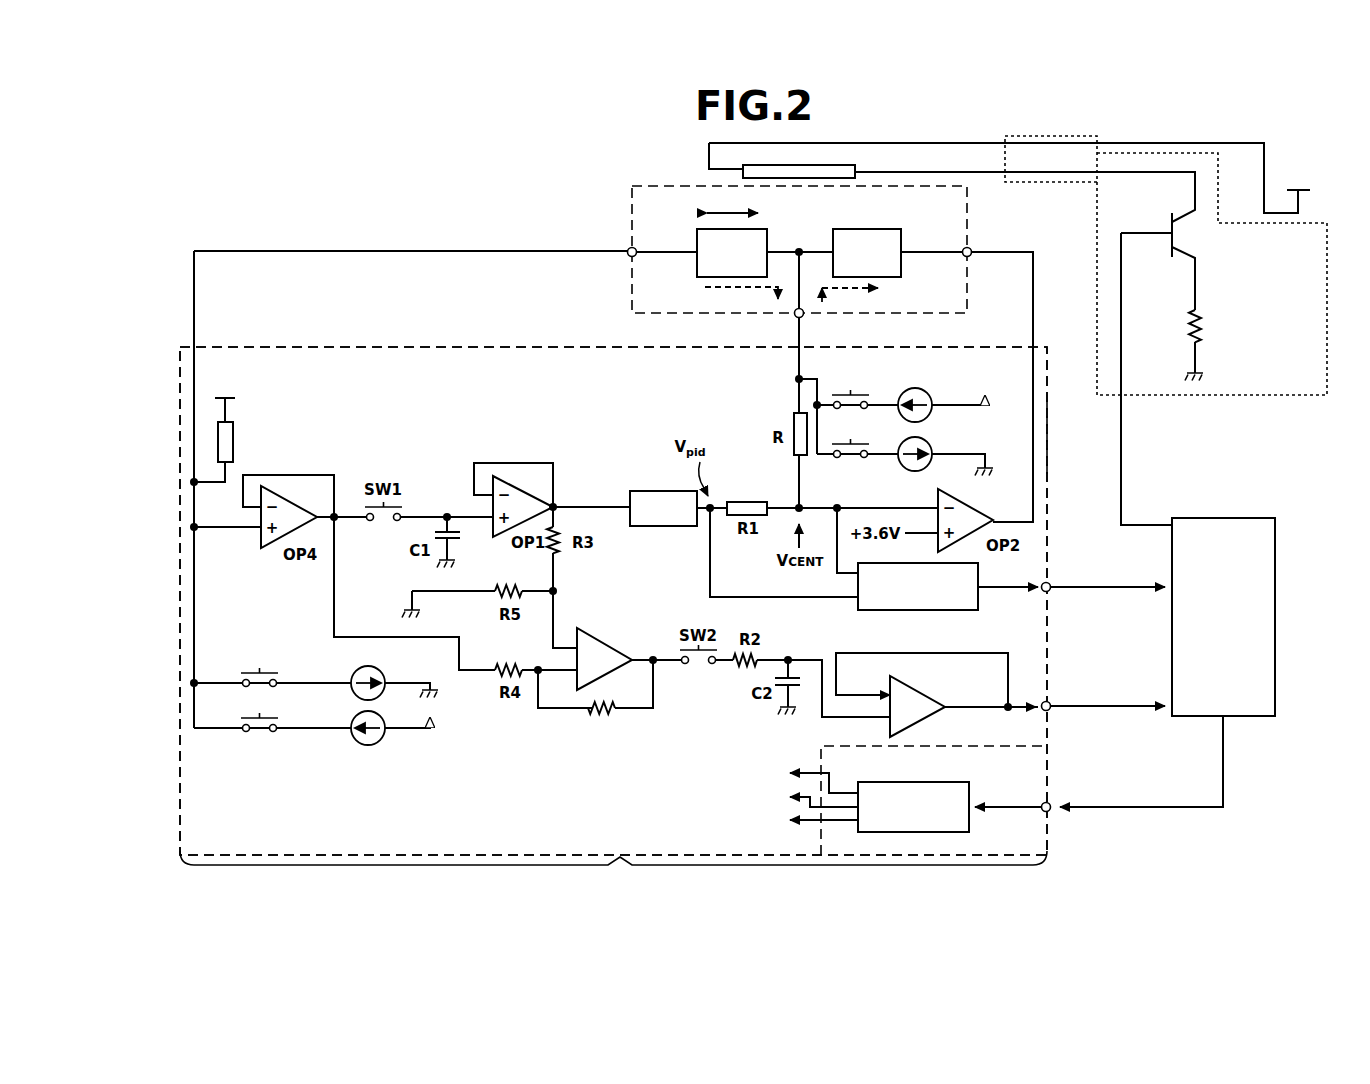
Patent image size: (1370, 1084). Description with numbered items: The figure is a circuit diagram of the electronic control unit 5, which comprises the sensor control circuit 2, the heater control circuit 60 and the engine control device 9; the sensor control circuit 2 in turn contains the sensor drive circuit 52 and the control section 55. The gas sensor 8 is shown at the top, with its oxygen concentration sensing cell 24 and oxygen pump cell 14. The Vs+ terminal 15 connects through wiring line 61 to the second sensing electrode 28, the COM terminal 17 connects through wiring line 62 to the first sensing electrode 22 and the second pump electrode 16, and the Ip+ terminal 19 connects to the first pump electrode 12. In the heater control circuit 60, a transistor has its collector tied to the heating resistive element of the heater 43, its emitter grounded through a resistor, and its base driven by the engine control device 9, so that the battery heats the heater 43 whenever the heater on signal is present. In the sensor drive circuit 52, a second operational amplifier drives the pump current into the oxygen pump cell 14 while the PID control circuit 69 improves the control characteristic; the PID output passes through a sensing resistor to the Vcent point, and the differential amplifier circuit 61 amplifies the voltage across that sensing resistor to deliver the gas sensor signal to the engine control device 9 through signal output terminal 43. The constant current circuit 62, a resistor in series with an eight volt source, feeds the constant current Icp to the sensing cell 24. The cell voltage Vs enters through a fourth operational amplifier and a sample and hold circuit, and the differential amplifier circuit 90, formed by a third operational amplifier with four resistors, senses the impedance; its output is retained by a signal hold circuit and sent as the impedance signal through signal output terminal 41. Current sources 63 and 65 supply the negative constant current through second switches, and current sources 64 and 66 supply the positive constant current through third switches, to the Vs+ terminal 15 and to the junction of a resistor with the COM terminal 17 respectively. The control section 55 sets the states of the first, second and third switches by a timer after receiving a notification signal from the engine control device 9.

The sensor control circuit 2 is at (613, 621).
The electronic control unit 5 is at (365, 210).
The gas sensor 8 is at (972, 198).
The engine control device 9 is at (1222, 518).
The first pump electrode 12 is at (901, 250).
The oxygen pump cell 14 is at (901, 270).
The first connection terminal (Vs+ terminal) 15 is at (630, 251).
The second pump electrode 16 is at (833, 248).
The second connection terminal (COM terminal) 17 is at (795, 314).
The third connection terminal (Ip+ terminal) 19 is at (967, 250).
The first sensing electrode 22 is at (767, 252).
The oxygen concentration sensing cell 24 is at (696, 242).
The second sensing electrode 28 is at (698, 264).
The signal output terminal 41 is at (1046, 702).
The heater 43 is at (808, 166).
The sensor drive circuit 52 is at (1047, 478).
The control section 55 is at (970, 792).
The heater control circuit 60 is at (1250, 395).
The differential amplifier circuit 61 is at (313, 253).
The constant current circuit 62 is at (805, 318).
The current source 63 is at (383, 674).
The current source 64 is at (352, 722).
The current source 65 is at (930, 392).
The current source 66 is at (906, 466).
The PID control circuit 69 is at (663, 527).
The differential amplifier circuit (operational amplifier circuit) 90 is at (527, 724).